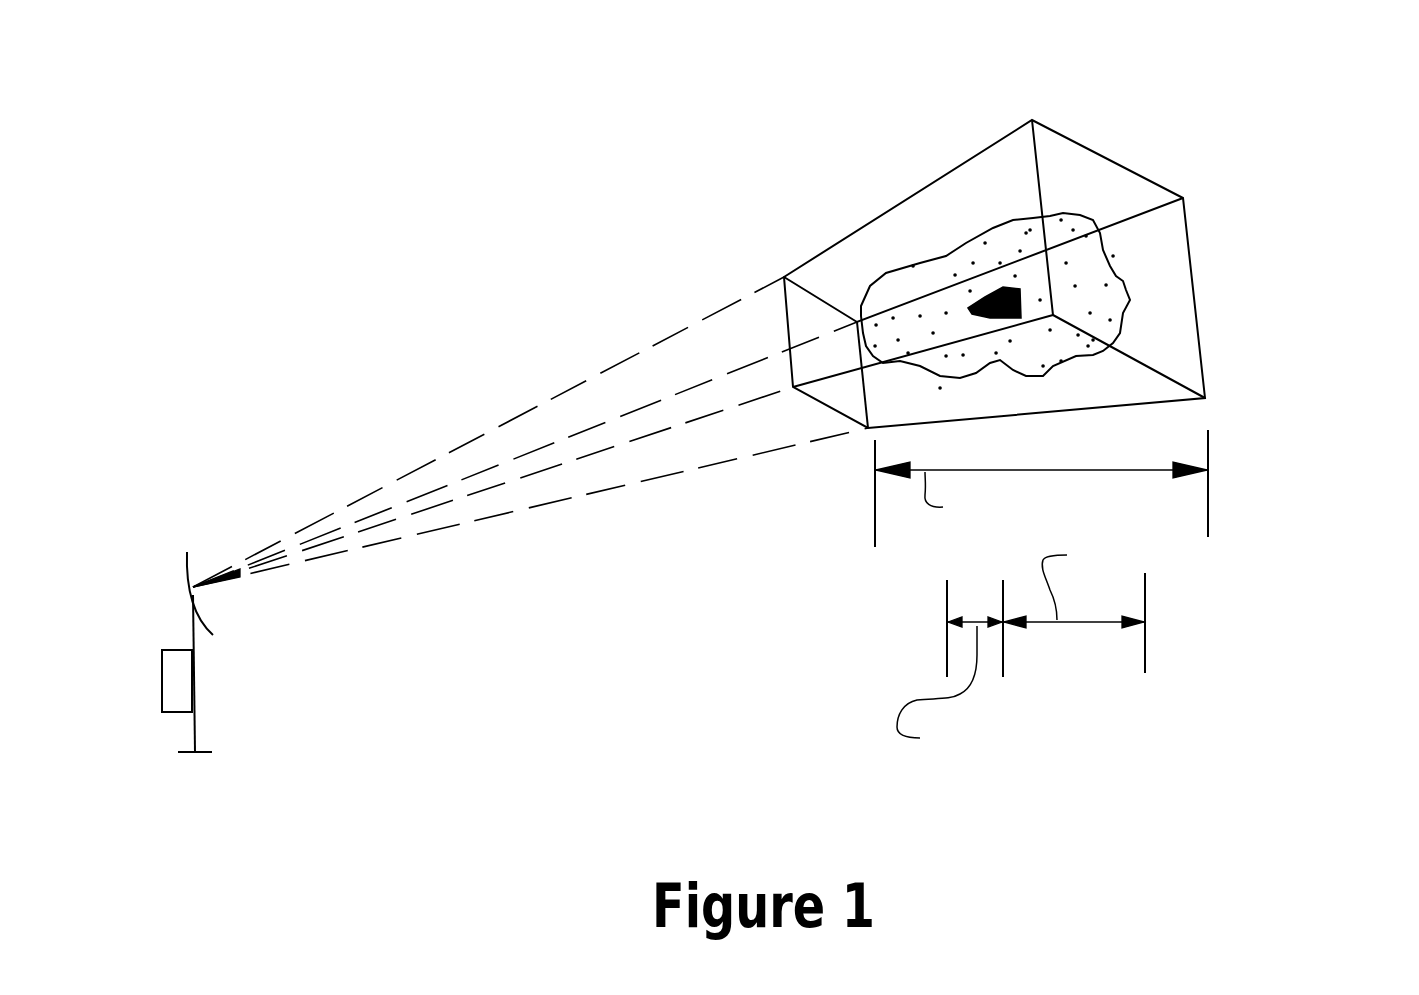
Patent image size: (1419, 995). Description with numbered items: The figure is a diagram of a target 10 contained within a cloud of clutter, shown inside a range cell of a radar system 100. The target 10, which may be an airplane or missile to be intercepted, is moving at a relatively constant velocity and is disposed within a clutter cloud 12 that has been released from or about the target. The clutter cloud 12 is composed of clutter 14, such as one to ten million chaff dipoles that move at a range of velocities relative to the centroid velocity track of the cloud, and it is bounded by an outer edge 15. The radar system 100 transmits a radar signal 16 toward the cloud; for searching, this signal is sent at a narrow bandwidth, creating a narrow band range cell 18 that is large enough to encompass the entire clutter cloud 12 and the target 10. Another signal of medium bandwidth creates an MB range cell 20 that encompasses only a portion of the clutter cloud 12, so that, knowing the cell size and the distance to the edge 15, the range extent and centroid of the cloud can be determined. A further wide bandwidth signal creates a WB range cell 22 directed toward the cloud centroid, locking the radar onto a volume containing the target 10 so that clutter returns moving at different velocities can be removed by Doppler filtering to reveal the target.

The target 10 is at (1040, 288).
The clutter cloud 12 is at (1120, 310).
The clutter 14 is at (932, 280).
The outer edge 15 is at (1097, 217).
The radar signal 16 is at (365, 545).
The narrow band range cell 18 is at (1210, 480).
The medium band range cell 20 is at (1147, 593).
The wide band range cell 22 is at (945, 645).
The radar system 100 is at (148, 669).